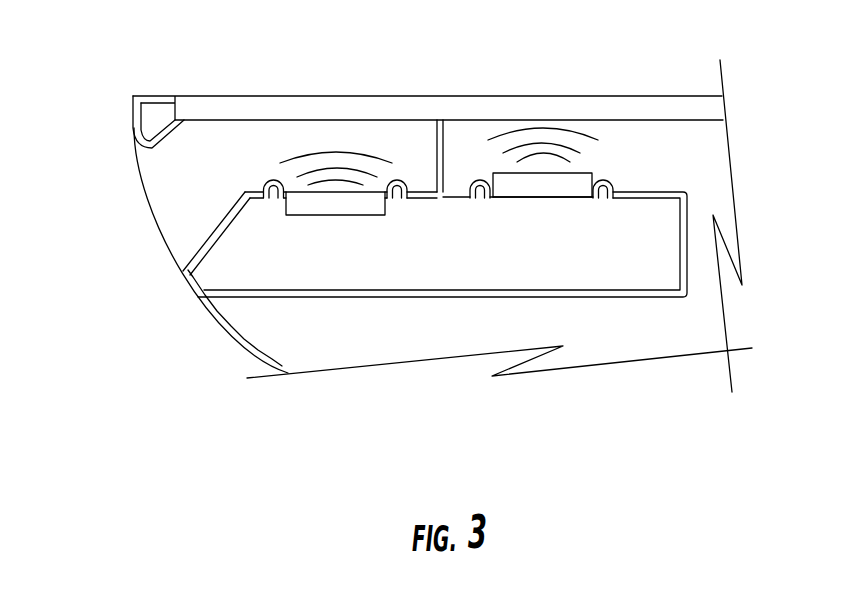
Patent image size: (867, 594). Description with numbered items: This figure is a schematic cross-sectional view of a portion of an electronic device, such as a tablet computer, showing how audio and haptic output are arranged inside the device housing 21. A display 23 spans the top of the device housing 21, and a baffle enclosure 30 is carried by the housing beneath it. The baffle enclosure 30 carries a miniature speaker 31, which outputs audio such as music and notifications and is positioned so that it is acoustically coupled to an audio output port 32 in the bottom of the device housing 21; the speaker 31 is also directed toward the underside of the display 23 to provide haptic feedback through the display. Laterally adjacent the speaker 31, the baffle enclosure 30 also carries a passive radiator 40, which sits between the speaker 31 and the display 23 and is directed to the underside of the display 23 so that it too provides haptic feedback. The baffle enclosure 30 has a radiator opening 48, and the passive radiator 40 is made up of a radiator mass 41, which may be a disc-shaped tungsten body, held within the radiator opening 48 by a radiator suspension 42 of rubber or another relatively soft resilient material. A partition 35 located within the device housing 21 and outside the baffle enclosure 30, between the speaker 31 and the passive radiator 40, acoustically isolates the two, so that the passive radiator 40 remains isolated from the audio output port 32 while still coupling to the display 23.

The device housing 21 is at (155, 100).
The display 23 is at (478, 105).
The baffle enclosure 30 is at (620, 293).
The speaker 31 is at (336, 200).
The audio output port 32 is at (173, 202).
The partition 35 is at (435, 153).
The passive radiator 40 is at (556, 134).
The radiator mass 41 is at (558, 178).
The radiator suspension 42 is at (482, 192).
The radiator opening 48 is at (503, 200).